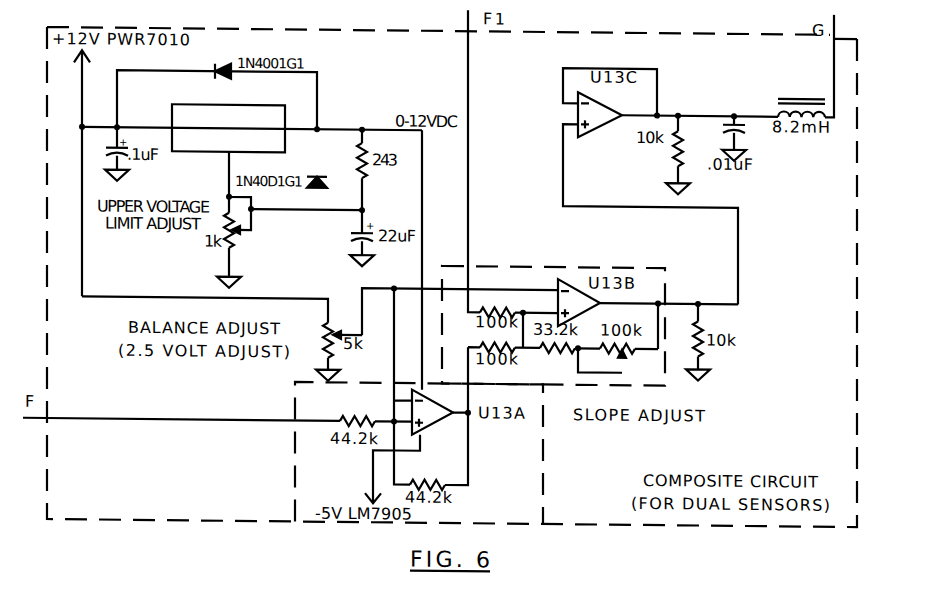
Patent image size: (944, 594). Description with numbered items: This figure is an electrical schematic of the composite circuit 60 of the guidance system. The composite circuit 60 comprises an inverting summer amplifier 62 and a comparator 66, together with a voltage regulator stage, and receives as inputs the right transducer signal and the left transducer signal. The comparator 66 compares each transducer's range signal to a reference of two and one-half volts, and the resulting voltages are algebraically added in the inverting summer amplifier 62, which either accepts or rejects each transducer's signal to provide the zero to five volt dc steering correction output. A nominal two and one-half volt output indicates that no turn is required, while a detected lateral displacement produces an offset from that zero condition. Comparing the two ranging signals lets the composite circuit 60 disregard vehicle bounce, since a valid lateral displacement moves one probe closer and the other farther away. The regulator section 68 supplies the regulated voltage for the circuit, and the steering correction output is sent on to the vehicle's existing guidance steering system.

The composite circuit 60 is at (588, 526).
The inverting summer amplifier 62 is at (295, 466).
The comparator 66 is at (557, 380).
The voltage regulator 68 is at (190, 105).